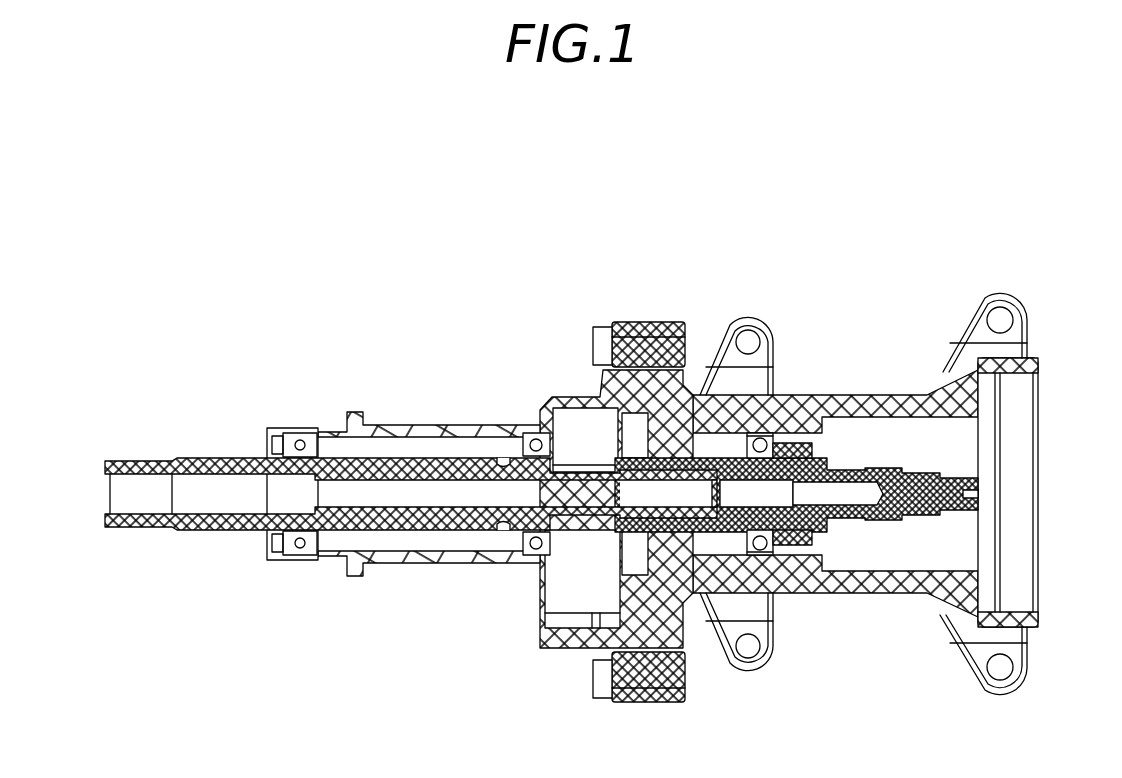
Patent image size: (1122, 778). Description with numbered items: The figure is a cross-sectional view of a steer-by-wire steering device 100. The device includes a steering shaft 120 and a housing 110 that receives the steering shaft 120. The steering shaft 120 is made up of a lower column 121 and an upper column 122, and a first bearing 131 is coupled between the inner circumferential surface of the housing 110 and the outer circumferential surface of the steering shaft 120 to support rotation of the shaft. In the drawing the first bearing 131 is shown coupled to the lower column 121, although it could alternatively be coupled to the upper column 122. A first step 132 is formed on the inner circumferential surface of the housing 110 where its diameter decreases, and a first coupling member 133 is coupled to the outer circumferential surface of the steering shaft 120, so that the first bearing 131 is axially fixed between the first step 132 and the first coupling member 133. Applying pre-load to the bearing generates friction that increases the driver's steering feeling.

The steer-by-wire steering device 100 is at (165, 238).
The housing 110 is at (863, 384).
The steering shaft 120 is at (946, 465).
The lower column 121 is at (893, 505).
The upper column 122 is at (413, 520).
The first bearing 131 is at (758, 433).
The first step 132 is at (745, 435).
The first coupling member 133 is at (802, 442).